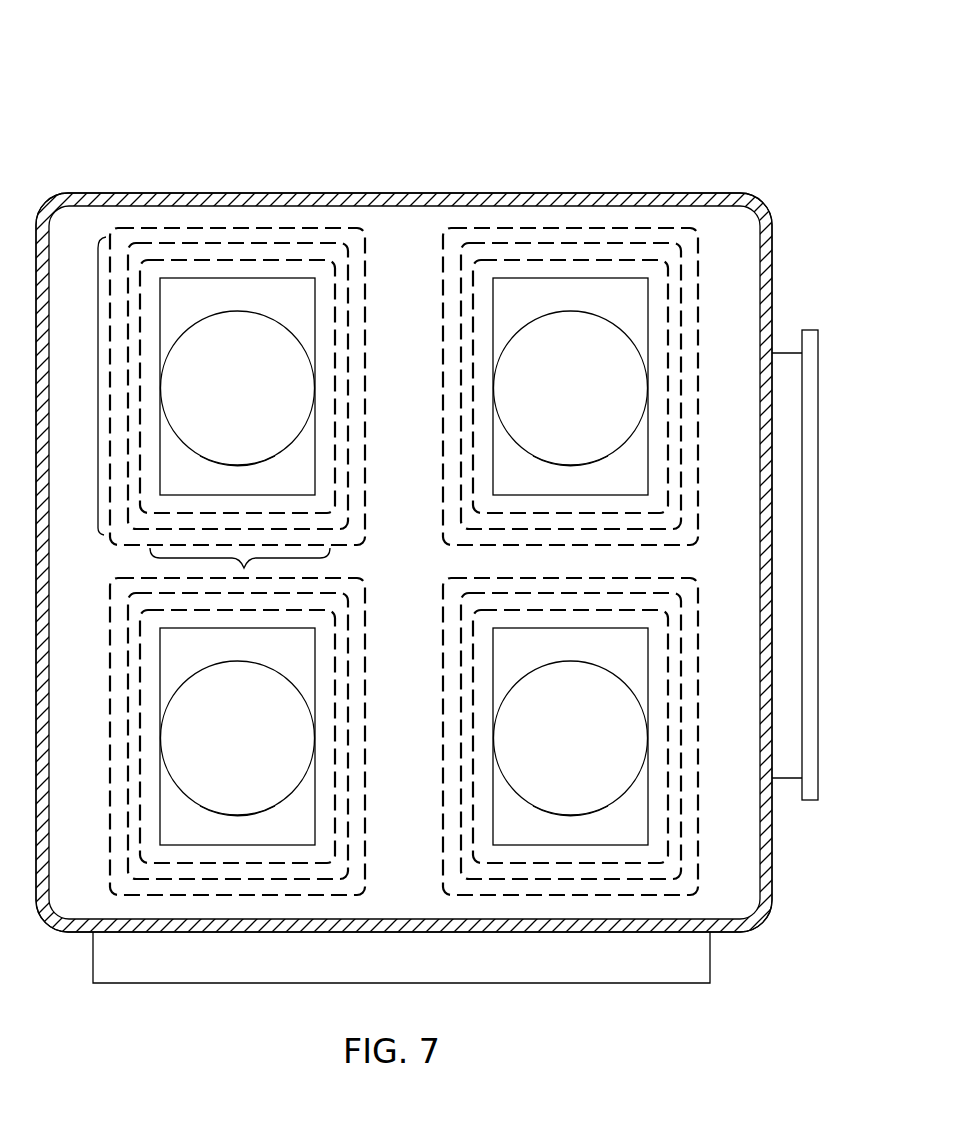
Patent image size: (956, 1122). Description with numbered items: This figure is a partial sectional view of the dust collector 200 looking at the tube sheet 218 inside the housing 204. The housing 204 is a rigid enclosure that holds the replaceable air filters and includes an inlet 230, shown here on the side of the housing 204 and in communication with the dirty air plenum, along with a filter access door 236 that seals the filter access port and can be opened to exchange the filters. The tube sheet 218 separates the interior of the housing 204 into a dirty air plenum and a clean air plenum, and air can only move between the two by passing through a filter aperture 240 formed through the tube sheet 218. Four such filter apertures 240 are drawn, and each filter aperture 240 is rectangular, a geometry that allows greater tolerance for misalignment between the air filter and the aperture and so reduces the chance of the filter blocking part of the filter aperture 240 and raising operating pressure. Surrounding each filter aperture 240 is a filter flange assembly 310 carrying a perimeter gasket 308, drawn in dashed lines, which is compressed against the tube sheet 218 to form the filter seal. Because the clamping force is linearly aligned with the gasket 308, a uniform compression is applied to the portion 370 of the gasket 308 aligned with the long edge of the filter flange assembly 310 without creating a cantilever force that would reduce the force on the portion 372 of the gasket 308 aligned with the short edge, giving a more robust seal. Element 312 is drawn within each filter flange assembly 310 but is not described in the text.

The dust collector 200 is at (603, 126).
The housing 204 is at (498, 193).
The tube sheet 218 is at (292, 198).
The inlet 230 is at (810, 330).
The filter access door 236 is at (612, 983).
The filter aperture 240 is at (177, 278).
The perimeter gasket 308 is at (265, 237).
The filter flange assembly 310 is at (283, 293).
The lens edge 312 is at (233, 464).
The portion of the gasket aligned with the long edge 370 is at (97, 393).
The portion of the gasket aligned with the short edge 372 is at (244, 570).